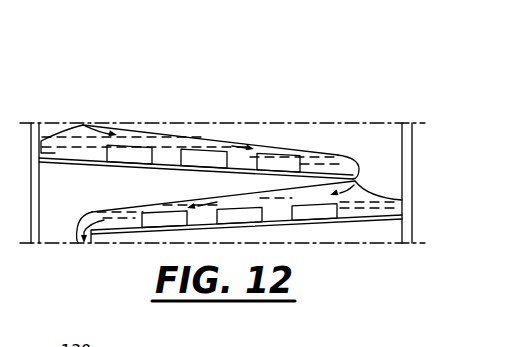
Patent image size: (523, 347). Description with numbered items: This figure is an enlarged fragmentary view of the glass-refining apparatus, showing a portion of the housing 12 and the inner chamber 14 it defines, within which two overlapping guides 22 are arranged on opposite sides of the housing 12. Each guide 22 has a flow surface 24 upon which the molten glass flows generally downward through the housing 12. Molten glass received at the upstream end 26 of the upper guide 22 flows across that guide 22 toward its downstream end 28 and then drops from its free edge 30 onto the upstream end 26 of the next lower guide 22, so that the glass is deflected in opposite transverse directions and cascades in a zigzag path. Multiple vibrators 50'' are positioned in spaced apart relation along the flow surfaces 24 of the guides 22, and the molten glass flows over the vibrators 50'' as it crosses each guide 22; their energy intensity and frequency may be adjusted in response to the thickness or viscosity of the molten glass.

The housing 12 is at (412, 224).
The inner chamber 14 is at (167, 194).
The guide 22 is at (65, 163).
The flow surface 24 is at (167, 156).
The upstream end 26 is at (56, 148).
The downstream end 28 is at (322, 162).
The free edge 30 is at (360, 169).
The vibrator 50'' is at (210, 161).